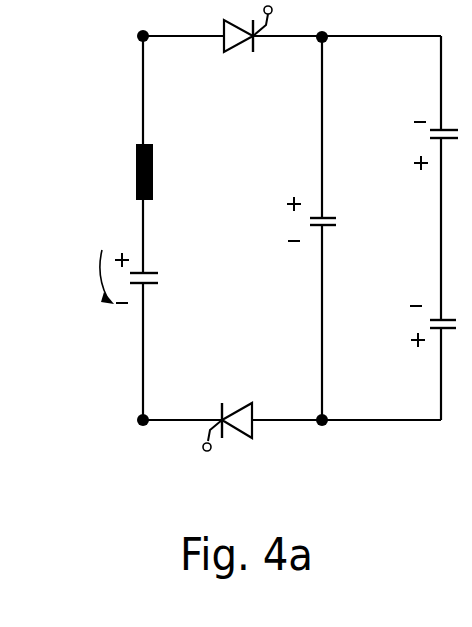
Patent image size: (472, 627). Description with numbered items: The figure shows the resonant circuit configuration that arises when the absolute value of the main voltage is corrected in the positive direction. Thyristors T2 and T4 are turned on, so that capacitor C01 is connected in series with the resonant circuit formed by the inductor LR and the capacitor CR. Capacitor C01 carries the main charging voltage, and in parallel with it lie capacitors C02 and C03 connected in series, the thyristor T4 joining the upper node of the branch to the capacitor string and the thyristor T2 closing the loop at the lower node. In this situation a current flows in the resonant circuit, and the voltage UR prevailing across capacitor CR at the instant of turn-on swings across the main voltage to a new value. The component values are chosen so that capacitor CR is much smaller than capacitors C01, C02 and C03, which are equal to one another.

The thyristor T4 is at (238, 50).
The thyristor T2 is at (230, 406).
The resonant circuit inductor LR is at (153, 162).
The capacitor CR is at (158, 277).
The voltage across capacitor CR UR is at (78, 277).
The capacitor C01 is at (330, 226).
The capacitor C02 is at (436, 137).
The capacitor C03 is at (440, 330).